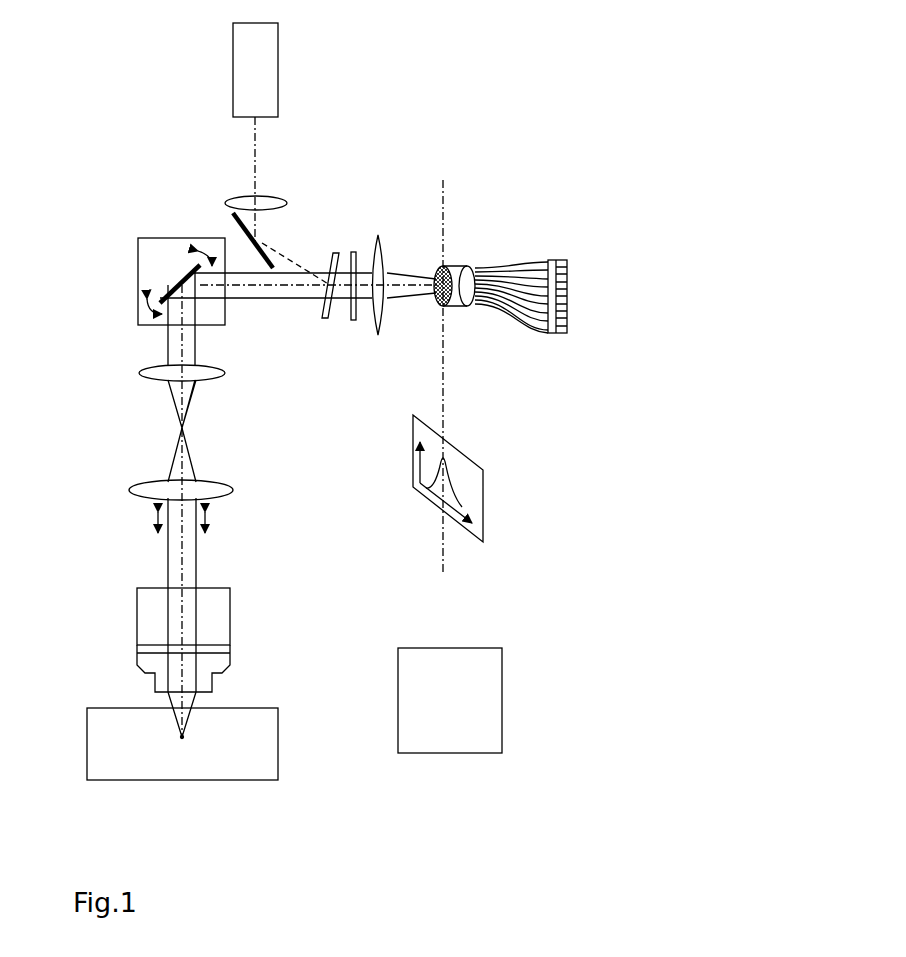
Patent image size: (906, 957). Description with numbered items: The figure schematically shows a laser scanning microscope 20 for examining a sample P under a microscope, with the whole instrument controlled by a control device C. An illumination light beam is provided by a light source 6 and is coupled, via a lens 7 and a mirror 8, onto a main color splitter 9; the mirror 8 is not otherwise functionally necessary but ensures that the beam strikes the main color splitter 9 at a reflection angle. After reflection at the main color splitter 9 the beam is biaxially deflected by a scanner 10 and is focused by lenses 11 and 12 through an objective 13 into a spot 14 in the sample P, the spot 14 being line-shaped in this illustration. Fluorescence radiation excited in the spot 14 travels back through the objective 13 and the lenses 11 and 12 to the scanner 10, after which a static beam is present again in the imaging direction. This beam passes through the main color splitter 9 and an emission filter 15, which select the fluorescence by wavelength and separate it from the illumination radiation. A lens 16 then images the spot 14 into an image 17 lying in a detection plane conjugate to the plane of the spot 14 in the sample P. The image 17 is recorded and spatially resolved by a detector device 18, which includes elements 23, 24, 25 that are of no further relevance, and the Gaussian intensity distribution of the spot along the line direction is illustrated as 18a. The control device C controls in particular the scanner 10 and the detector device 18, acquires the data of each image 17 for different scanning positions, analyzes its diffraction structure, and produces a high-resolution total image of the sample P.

The laser scanning microscope 20 is at (72, 74).
The light source 6 is at (278, 88).
The lens 7 is at (287, 203).
The mirror 8 is at (233, 214).
The scanner 10 is at (180, 238).
The main color splitter 9 is at (326, 320).
The emission filter 15 is at (355, 249).
The lens 16 is at (378, 335).
The image 17 is at (447, 267).
The detector device 18 is at (447, 305).
The intensity distribution 18a is at (448, 469).
The detector device element 23 is at (583, 261).
The detector device element 24 is at (583, 261).
The detector device element 25 is at (560, 246).
The lens 11 is at (225, 374).
The lens 12 is at (233, 488).
The objective 13 is at (230, 628).
The sample P is at (250, 750).
The spot 14 is at (182, 737).
The control device C is at (450, 700).